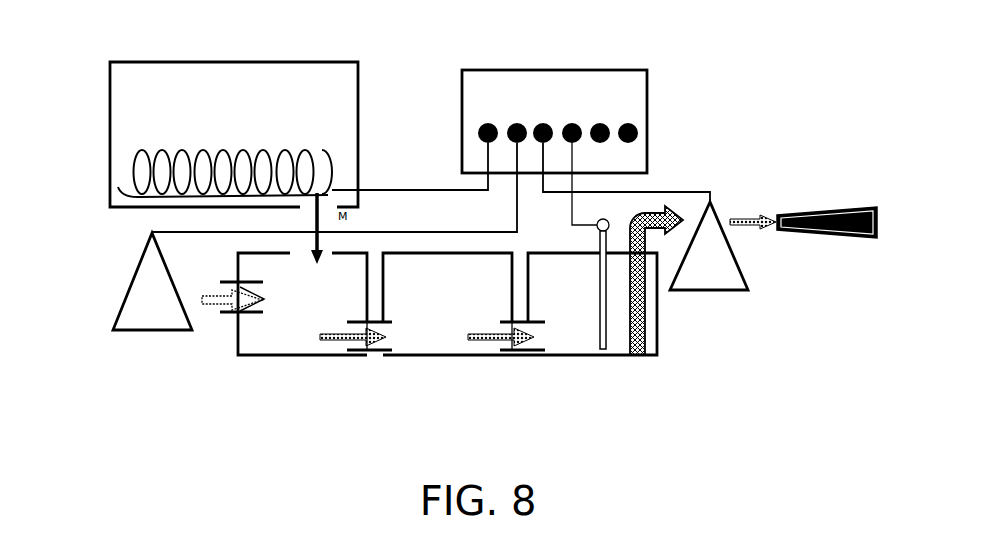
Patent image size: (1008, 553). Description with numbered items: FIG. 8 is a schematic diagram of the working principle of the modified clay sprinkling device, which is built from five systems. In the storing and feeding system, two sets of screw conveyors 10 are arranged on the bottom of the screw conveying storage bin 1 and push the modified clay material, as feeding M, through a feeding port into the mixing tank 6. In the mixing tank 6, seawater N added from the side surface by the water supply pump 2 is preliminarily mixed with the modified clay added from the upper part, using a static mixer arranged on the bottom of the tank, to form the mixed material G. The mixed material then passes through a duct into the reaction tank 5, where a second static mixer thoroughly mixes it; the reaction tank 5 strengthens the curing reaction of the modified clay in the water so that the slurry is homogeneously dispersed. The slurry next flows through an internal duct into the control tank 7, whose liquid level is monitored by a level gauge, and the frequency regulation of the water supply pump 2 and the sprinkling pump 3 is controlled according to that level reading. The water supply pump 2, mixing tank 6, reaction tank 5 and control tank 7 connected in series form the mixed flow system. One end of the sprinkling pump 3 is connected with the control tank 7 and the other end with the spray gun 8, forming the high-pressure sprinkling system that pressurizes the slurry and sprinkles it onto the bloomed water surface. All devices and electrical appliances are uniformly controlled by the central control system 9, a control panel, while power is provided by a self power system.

The screw conveying storage bin 1 is at (135, 75).
The screw conveyor 10 is at (132, 177).
The central control system 9 is at (555, 77).
The water supply pump 2 is at (118, 305).
The sprinkling pump 3 is at (718, 293).
The reaction tank 5 is at (432, 347).
The mixing tank 6 is at (265, 358).
The control tank 7 is at (590, 347).
The spray gun 8 is at (835, 238).